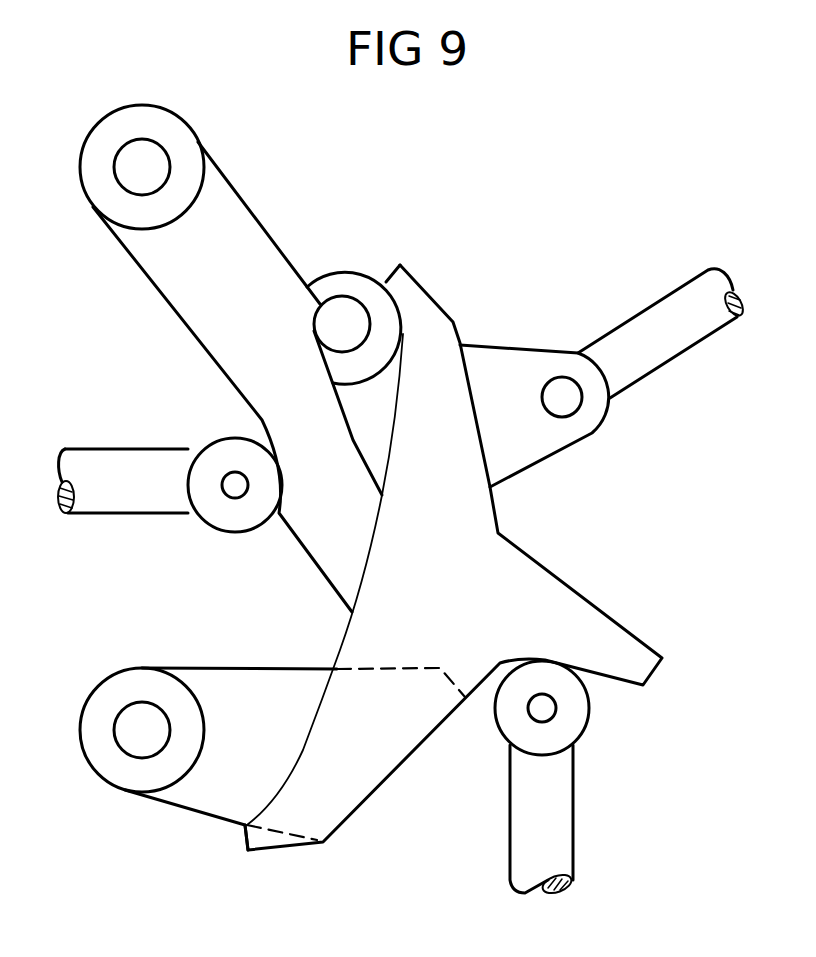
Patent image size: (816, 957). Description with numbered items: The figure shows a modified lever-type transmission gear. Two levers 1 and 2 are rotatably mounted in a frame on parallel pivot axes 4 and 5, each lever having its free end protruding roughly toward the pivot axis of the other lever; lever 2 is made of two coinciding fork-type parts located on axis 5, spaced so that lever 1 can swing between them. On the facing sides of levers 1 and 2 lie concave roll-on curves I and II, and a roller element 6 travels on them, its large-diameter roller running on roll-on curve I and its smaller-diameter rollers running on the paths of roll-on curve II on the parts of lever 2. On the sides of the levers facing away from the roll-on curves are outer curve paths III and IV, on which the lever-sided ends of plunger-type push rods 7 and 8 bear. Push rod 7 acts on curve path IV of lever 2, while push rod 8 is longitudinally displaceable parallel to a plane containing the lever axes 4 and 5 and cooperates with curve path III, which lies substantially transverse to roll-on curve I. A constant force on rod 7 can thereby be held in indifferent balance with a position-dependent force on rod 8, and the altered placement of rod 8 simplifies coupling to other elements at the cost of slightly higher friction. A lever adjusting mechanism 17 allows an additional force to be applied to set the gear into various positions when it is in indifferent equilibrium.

The lever 1 is at (560, 601).
The lever 2 is at (238, 223).
The pivot axis 4 is at (134, 741).
The pivot axis 5 is at (123, 163).
The roller element 6 is at (343, 282).
The push rod 7 is at (121, 494).
The push rod 8 is at (551, 822).
The lever adjusting mechanism 17 is at (652, 317).
The roll-on curve I is at (393, 427).
The roll-on curve II is at (343, 414).
The curve path III is at (607, 678).
The curve path IV is at (262, 428).